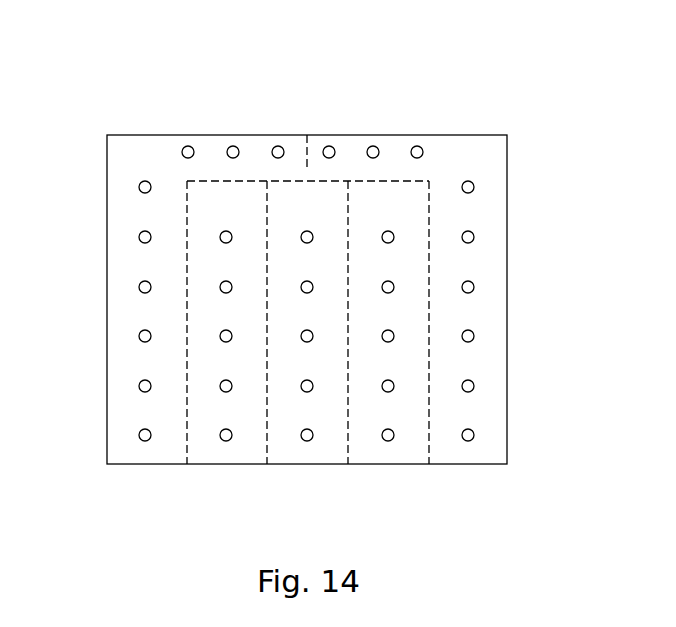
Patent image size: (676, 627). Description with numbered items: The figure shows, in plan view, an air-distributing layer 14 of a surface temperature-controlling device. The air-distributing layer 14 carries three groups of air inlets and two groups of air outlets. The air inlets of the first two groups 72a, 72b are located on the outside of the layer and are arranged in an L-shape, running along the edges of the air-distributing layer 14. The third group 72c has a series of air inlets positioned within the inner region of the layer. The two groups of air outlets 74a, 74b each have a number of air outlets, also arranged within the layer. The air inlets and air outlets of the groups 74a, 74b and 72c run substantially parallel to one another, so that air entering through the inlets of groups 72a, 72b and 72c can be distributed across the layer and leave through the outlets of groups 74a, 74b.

The air-distributing layer 14 is at (473, 112).
The group of air inlets 72a is at (128, 355).
The group of air inlets 72b is at (483, 251).
The group of air inlets 72c is at (328, 440).
The group of air outlets 74a is at (245, 218).
The group of air outlets 74b is at (391, 229).